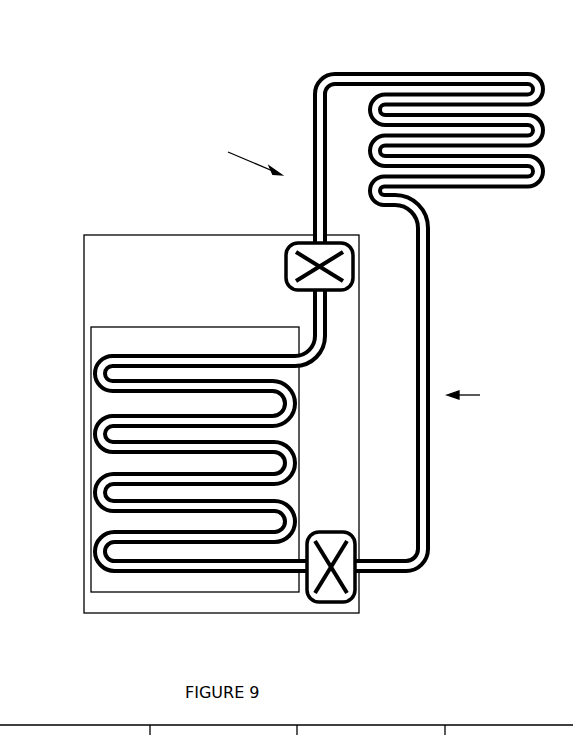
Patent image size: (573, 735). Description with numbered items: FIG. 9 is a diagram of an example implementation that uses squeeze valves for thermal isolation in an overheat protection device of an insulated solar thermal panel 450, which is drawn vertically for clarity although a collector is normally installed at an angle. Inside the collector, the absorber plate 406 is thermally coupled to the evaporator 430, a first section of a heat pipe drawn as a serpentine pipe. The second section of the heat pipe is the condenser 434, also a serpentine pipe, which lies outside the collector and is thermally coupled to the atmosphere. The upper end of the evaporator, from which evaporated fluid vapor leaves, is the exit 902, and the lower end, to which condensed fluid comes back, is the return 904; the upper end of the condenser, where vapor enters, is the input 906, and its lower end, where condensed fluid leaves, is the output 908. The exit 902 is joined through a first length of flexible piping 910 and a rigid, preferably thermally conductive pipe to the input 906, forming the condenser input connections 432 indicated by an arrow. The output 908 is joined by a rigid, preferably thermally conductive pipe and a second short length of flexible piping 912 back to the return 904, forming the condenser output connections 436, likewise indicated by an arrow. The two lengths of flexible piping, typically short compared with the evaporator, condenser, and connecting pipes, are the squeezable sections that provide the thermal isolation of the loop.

The absorber plate 406 is at (195, 459).
The evaporator 430 is at (110, 418).
The condenser input connections 432 is at (238, 160).
The condenser 434 is at (445, 71).
The condenser output connections 436 is at (479, 394).
The insulated solar thermal panel 450 is at (221, 424).
The exit 902 is at (312, 322).
The return 904 is at (282, 577).
The input 906 is at (368, 72).
The output 908 is at (432, 259).
The first length of flexible piping 910 is at (290, 244).
The second length of flexible piping 912 is at (332, 602).